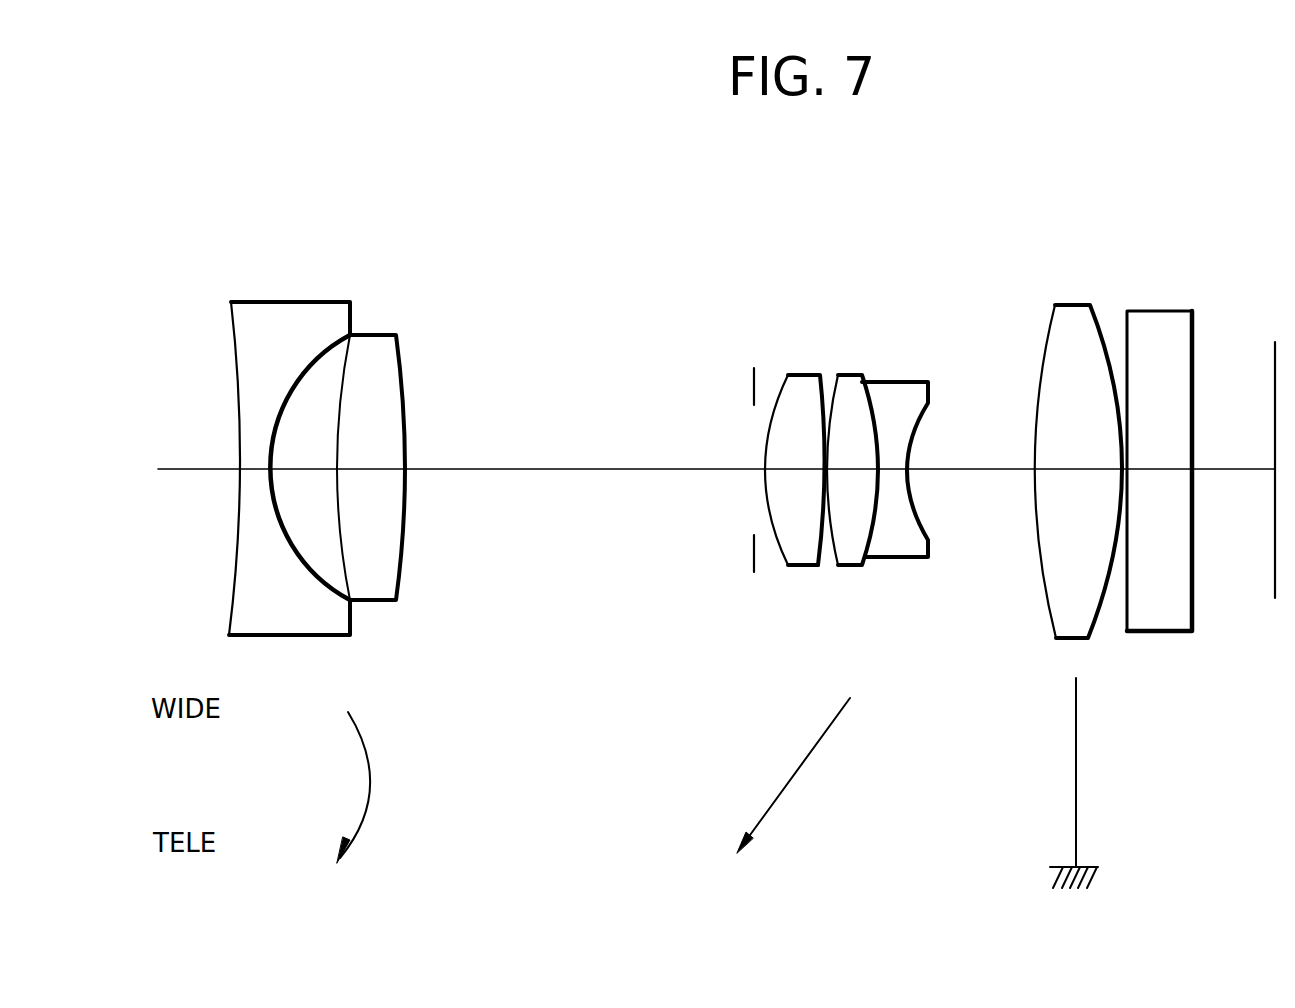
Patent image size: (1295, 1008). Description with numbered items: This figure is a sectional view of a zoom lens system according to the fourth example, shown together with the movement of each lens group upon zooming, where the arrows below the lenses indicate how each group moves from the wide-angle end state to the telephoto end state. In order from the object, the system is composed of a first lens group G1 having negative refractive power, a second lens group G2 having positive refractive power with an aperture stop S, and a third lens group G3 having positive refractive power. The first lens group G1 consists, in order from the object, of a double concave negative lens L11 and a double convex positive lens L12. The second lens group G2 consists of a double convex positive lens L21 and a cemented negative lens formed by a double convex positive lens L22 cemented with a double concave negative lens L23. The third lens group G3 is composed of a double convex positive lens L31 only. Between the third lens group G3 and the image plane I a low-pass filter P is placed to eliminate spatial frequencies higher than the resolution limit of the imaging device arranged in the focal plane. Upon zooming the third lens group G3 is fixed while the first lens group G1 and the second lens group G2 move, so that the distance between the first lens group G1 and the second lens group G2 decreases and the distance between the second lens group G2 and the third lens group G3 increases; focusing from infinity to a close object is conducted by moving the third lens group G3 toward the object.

The first lens group G1 is at (408, 222).
The double concave negative lens L11 is at (258, 301).
The double convex positive lens L12 is at (371, 334).
The aperture stop S is at (752, 378).
The second lens group G2 is at (953, 282).
The double convex positive lens L21 is at (800, 374).
The double convex positive lens L22 is at (853, 374).
The double concave negative lens L23 is at (905, 381).
The third lens group G3 is at (1104, 232).
The double convex positive lens L31 is at (1075, 304).
The low-pass filter P is at (1163, 310).
The image plane I is at (1274, 358).